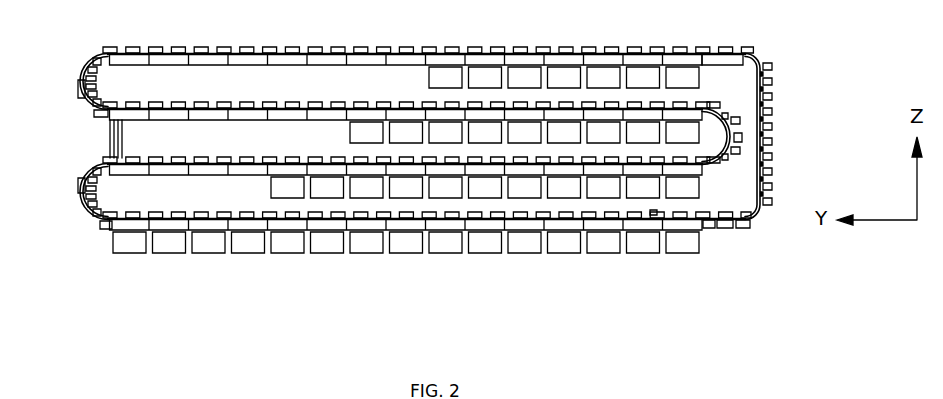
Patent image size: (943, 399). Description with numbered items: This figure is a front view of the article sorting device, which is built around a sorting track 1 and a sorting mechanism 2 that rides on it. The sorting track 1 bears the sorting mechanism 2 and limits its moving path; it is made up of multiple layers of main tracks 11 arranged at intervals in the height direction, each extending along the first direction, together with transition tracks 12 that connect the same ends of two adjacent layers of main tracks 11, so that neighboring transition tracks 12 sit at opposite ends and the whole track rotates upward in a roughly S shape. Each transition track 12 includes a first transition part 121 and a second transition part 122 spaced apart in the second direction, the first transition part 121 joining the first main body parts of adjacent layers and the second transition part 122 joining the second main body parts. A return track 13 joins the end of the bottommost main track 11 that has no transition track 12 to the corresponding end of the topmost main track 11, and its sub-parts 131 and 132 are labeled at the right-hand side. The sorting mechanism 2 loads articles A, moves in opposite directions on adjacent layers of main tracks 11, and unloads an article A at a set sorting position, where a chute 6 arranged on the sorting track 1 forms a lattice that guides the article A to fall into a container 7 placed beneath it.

The sorting track 1 is at (84, 196).
The sorting mechanism 2 is at (268, 48).
The chute 6 is at (120, 223).
The container 7 is at (173, 246).
The main track 11 is at (722, 220).
The transition track 12 is at (98, 60).
The return track 13 is at (772, 80).
The first transition part 121 is at (88, 102).
The second transition part 122 is at (80, 78).
The first connecting piece 131 is at (772, 153).
The second connecting piece 132 is at (772, 127).
The article A is at (653, 215).